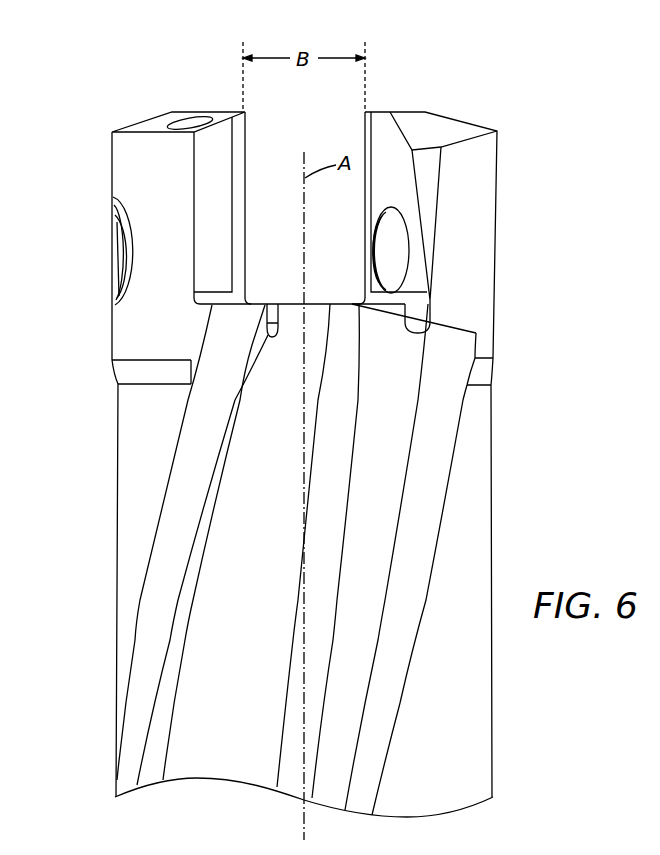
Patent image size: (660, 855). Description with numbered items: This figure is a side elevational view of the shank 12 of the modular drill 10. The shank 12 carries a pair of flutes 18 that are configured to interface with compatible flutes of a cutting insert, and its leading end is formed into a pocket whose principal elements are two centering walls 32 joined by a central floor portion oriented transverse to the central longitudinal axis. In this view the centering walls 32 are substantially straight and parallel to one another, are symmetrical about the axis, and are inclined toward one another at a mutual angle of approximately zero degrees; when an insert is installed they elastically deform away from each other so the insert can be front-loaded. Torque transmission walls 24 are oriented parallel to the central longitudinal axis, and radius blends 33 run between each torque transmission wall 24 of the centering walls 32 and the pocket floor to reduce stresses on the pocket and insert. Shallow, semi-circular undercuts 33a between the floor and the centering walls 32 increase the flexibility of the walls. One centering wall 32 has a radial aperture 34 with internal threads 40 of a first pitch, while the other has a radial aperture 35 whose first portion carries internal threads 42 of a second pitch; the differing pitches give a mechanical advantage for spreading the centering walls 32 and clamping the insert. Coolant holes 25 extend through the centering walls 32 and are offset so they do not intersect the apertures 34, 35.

The modular drill 10 is at (100, 86).
The shank 12 is at (503, 757).
The flutes 18 is at (359, 616).
The torque transmission walls 24 is at (215, 190).
The coolant holes 25 is at (190, 118).
The centering walls 32 is at (143, 160).
The radius blends 33 is at (213, 298).
The semi-circular undercuts 33a is at (420, 330).
The aperture 34 is at (400, 265).
The aperture 35 is at (120, 265).
The internal threads 40 is at (390, 237).
The internal threads 42 is at (120, 223).